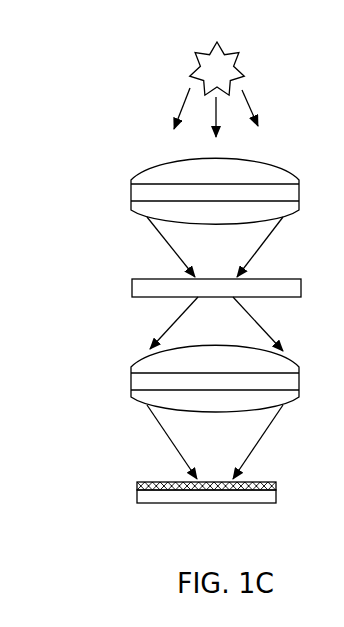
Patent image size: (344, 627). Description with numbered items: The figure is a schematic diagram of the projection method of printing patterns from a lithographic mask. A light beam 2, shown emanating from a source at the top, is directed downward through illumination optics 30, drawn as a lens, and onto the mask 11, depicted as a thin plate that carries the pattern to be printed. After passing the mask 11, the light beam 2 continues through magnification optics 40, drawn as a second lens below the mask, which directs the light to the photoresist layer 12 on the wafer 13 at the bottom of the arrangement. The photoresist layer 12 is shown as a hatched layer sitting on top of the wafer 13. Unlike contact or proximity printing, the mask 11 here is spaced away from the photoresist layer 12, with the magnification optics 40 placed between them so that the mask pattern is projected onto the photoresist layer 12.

The light beam 2 is at (182, 68).
The illumination optics 30 is at (125, 193).
The mask 11 is at (127, 288).
The magnification optics 40 is at (127, 377).
The photoresist layer 12 is at (130, 487).
The wafer 13 is at (130, 498).